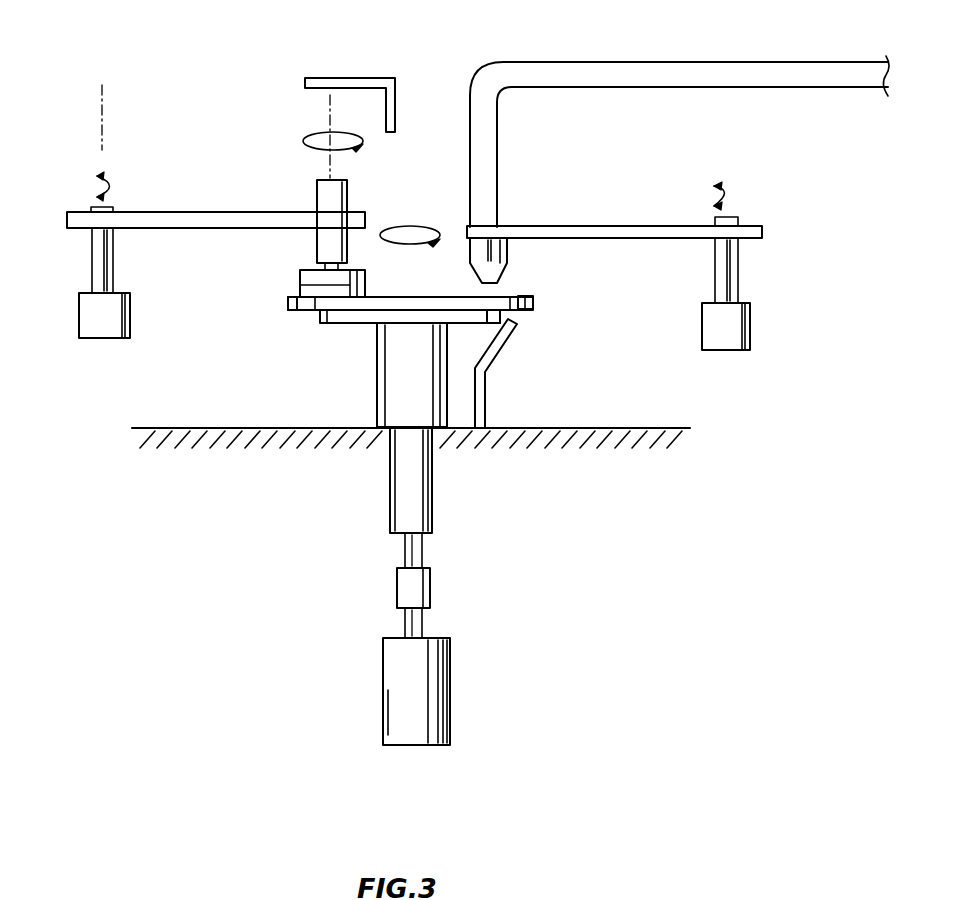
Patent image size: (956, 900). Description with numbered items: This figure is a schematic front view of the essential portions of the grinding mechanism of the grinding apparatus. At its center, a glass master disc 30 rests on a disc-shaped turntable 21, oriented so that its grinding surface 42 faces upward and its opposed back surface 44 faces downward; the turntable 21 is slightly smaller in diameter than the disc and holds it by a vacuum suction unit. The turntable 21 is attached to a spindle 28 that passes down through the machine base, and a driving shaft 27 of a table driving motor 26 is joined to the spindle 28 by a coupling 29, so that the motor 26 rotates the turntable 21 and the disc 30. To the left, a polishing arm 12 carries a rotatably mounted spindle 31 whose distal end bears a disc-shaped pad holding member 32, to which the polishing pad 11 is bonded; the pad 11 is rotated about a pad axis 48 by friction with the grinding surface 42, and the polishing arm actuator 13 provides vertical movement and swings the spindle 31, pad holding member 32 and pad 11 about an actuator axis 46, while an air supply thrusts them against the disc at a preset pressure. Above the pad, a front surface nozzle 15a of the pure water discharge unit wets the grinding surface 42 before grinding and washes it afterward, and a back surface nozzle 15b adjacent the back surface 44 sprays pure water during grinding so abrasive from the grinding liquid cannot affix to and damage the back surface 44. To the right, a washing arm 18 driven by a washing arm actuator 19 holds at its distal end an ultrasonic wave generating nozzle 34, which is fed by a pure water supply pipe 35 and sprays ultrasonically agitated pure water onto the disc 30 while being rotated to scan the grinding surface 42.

The actuator axis 46 is at (100, 125).
The pad axis 48 is at (330, 107).
The front surface nozzle 15a is at (347, 78).
The pure water supply pipe 35 is at (676, 68).
The polishing arm 12 is at (216, 218).
The polishing arm actuator 13 is at (80, 315).
The spindle 31 is at (315, 240).
The pad holding member 32 is at (300, 285).
The glass master disc 30 is at (418, 300).
The polishing pad 11 is at (295, 308).
The turntable 21 is at (343, 323).
The spindle 28 is at (392, 400).
The washing arm 18 is at (618, 226).
The ultrasonic wave generating nozzle 34 is at (505, 265).
The grinding surface 42 is at (518, 296).
The back surface 44 is at (505, 316).
The washing arm actuator 19 is at (745, 335).
The back surface nozzle 15b is at (490, 353).
The coupling 29 is at (413, 588).
The driving shaft 27 is at (413, 622).
The table driving motor 26 is at (437, 695).